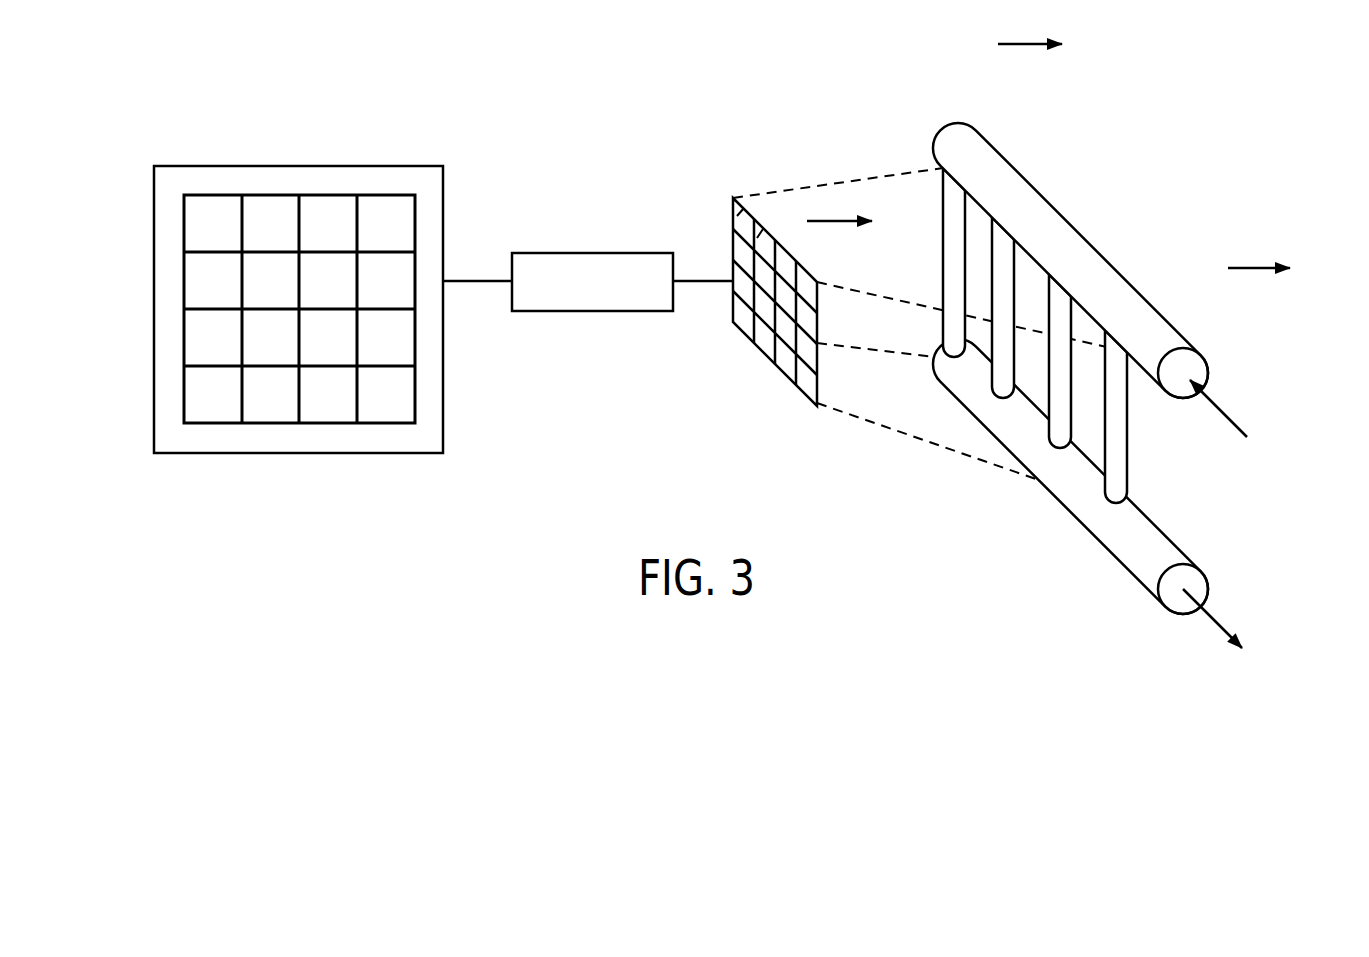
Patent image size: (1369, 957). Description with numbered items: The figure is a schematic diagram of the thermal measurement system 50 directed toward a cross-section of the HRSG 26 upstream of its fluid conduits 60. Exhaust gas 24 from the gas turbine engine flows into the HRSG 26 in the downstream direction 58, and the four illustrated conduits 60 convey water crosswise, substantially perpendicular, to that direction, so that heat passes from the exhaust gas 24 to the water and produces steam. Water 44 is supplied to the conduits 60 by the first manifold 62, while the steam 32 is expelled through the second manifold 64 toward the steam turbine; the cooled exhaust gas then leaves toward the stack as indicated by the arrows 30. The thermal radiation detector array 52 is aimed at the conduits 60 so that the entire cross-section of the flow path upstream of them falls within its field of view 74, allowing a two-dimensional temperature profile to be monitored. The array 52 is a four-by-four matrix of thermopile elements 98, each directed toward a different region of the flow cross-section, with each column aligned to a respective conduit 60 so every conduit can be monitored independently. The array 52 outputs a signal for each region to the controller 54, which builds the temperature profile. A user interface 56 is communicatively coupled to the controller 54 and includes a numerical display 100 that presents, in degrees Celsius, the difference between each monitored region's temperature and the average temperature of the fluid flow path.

The exhaust gas 24 is at (835, 218).
The HRSG 26 is at (1041, 363).
The arrows 30 is at (1248, 268).
The steam 32 is at (1222, 622).
The water 44 is at (1225, 408).
The thermal measurement system 50 is at (628, 370).
The thermal radiation detector array 52 is at (780, 369).
The controller 54 is at (594, 253).
The user interface 56 is at (443, 211).
The downstream direction 58 is at (1018, 43).
The conduits 60 is at (943, 258).
The first manifold 62 is at (1073, 220).
The second manifold 64 is at (1063, 510).
The field of view 74 is at (843, 180).
The thermopile elements 98 is at (762, 236).
The numerical display 100 is at (184, 219).